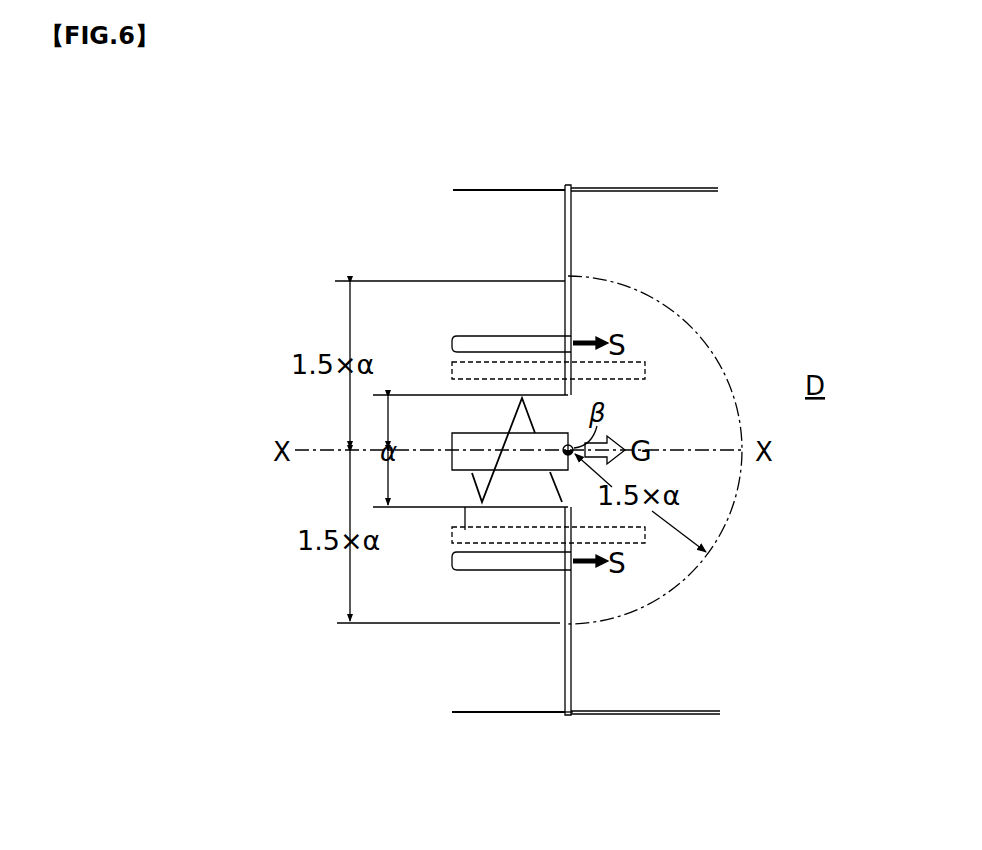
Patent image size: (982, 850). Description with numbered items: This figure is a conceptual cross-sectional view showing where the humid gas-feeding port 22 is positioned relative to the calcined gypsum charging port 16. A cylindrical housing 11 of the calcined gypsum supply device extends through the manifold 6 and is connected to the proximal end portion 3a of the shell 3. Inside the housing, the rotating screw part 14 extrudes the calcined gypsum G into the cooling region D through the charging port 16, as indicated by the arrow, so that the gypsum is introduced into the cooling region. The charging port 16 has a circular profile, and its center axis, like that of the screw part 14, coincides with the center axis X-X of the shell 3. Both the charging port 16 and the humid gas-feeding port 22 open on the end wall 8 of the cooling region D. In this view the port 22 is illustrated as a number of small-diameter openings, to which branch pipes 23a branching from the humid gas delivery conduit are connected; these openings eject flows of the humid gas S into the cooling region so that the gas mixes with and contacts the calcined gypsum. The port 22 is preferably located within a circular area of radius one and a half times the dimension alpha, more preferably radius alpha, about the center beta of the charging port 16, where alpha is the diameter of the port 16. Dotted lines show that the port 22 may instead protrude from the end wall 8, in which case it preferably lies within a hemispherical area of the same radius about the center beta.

The shell 3 is at (632, 190).
The proximal end portion 3a is at (566, 718).
The manifold 6 is at (507, 190).
The end wall 8 is at (569, 688).
The cylindrical housing 11 is at (465, 510).
The screw part 14 is at (470, 442).
The calcined gypsum charging port 16 is at (576, 398).
The humid gas-feeding port 22 is at (574, 336).
The branch pipe 23a is at (496, 345).